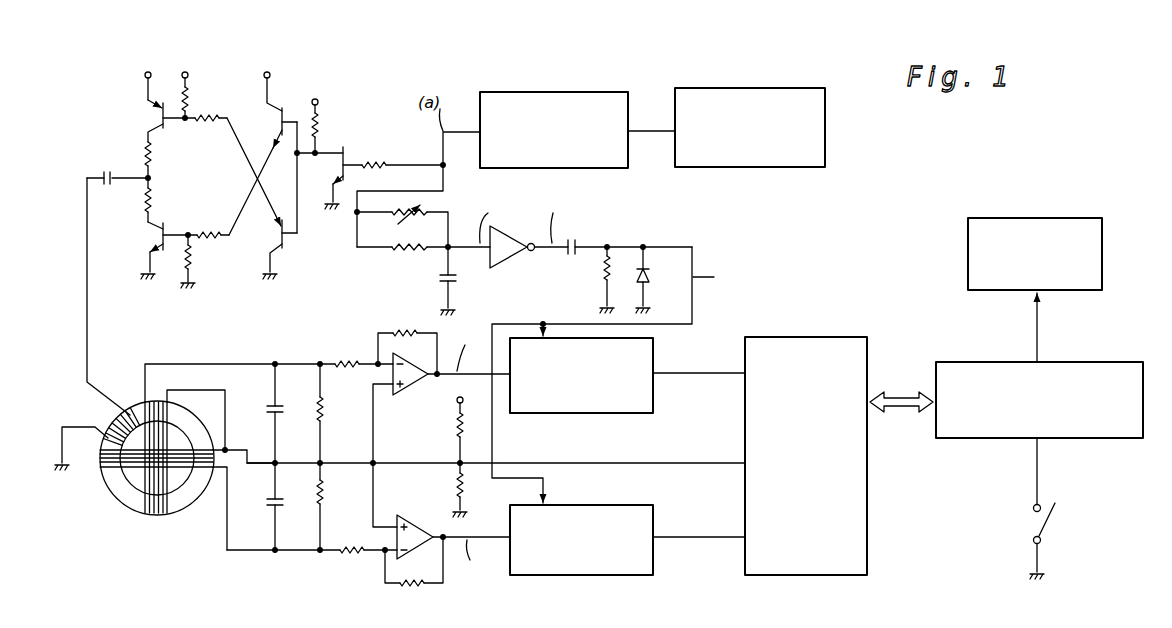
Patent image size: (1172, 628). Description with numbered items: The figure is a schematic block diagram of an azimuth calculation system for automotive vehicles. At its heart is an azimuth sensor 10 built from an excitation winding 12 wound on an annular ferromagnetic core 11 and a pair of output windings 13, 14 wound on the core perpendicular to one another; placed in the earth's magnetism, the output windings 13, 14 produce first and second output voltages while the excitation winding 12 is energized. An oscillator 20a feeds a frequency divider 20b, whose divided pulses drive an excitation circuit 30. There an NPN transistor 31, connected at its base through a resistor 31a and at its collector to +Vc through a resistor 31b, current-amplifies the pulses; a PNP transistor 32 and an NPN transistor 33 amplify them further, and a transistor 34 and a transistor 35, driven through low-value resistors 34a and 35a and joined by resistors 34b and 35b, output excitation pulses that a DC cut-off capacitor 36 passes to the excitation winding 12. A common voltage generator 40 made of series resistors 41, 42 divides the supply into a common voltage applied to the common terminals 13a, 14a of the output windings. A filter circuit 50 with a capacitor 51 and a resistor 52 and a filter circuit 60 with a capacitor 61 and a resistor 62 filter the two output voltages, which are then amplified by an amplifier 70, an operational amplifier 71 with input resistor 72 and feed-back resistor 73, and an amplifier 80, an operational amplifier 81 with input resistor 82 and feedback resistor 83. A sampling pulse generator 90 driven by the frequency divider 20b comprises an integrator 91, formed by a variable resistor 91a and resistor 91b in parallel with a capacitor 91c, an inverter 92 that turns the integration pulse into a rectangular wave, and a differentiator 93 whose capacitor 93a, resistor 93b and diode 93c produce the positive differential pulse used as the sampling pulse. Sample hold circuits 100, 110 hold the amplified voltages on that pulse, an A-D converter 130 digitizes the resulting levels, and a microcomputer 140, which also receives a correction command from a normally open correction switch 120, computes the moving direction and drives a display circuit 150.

The azimuth sensor 10 is at (165, 463).
The annular ferromagnetic core 11 is at (118, 494).
The excitation winding 12 is at (112, 430).
The output winding 13 is at (167, 408).
The common terminal 13a is at (226, 431).
The output winding 14 is at (203, 469).
The common terminal 14a is at (232, 463).
The oscillator 20a is at (760, 88).
The frequency divider 20b is at (568, 92).
The excitation circuit 30 is at (350, 106).
The transistor 31 is at (341, 150).
The resistor 31a is at (383, 164).
The resistor 31b is at (325, 128).
The transistor 32 is at (269, 249).
The transistor 33 is at (277, 122).
The transistor 34 is at (166, 228).
The resistor 34a is at (194, 258).
The resistor 34b is at (147, 198).
The transistor 35 is at (161, 133).
The resistor 35a is at (194, 96).
The resistor 35b is at (155, 161).
The DC cut-off capacitor 36 is at (110, 174).
The common voltage generator 40 is at (471, 519).
The resistor 41 is at (468, 490).
The resistor 42 is at (453, 426).
The filter circuit 50 is at (329, 342).
The capacitor 51 is at (283, 409).
The resistor 52 is at (327, 409).
The filter circuit 60 is at (308, 565).
The capacitor 61 is at (283, 501).
The resistor 62 is at (327, 497).
The amplifier 70 is at (397, 403).
The operational amplifier 71 is at (423, 383).
The input resistor 72 is at (344, 358).
The feed-back resistor 73 is at (407, 331).
The amplifier 80 is at (418, 518).
The operational amplifier 81 is at (428, 547).
The input resistor 82 is at (350, 556).
The feedback resistor 83 is at (408, 588).
The sampling pulse generator 90 is at (711, 230).
The integrator 91 is at (430, 260).
The variable resistor 91a is at (411, 220).
The resistor 91b is at (407, 253).
The capacitor 91c is at (461, 279).
The inverter 92 is at (521, 252).
The differentiator 93 is at (624, 261).
The capacitor 93a is at (571, 256).
The resistor 93b is at (603, 284).
The diode 93c is at (651, 272).
The sample hold circuit 100 is at (654, 404).
The sample hold circuit 110 is at (655, 518).
The correction switch 120 is at (1035, 524).
The A-D converter 130 is at (867, 504).
The microcomputer 140 is at (1078, 362).
The display circuit 150 is at (1057, 218).